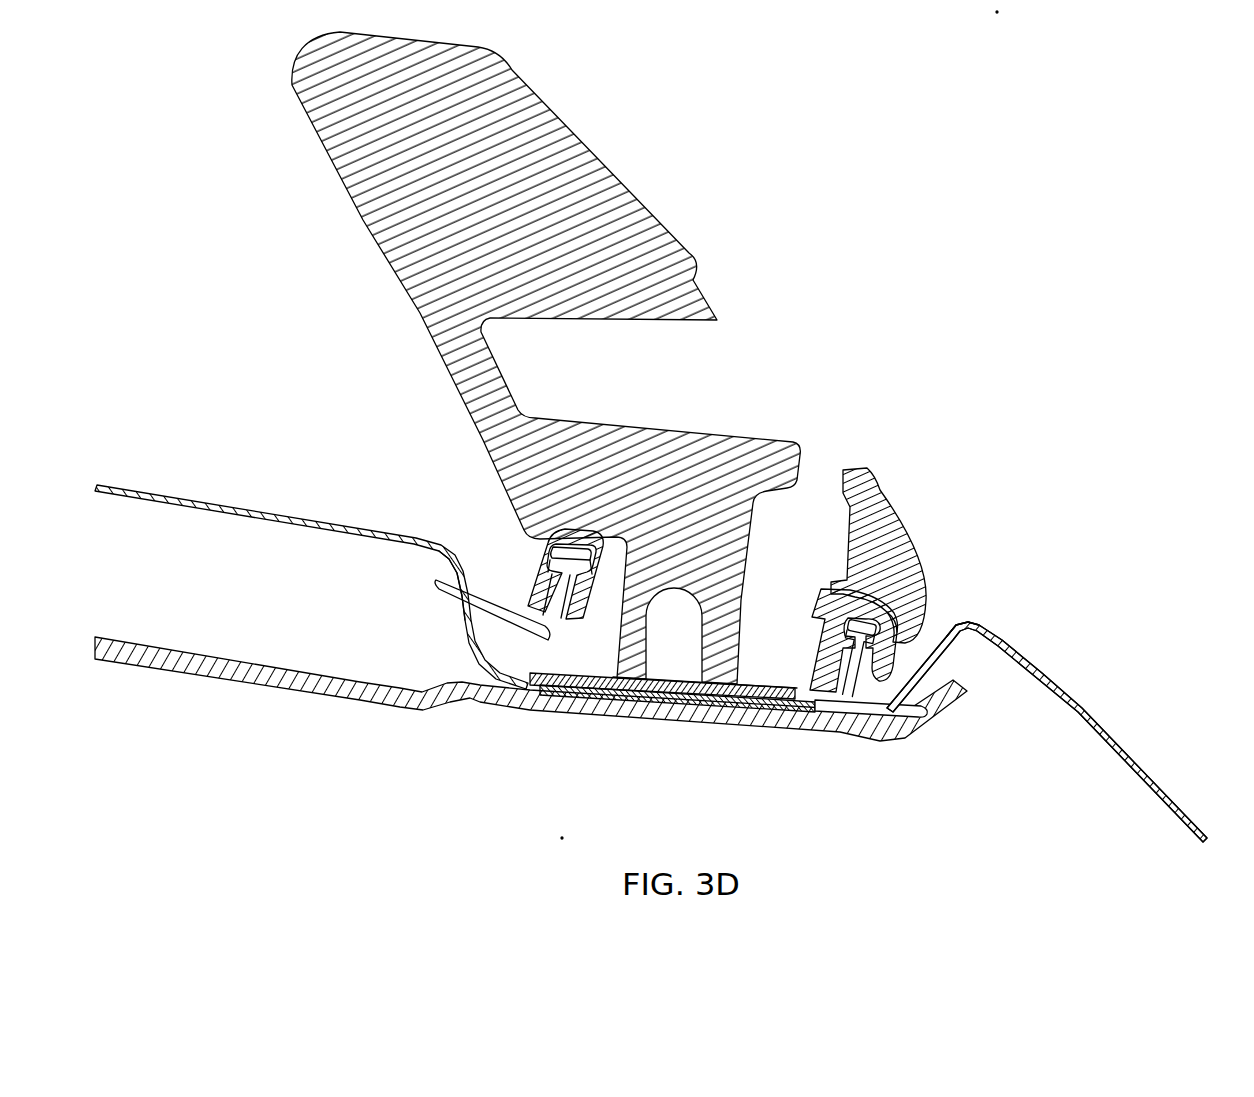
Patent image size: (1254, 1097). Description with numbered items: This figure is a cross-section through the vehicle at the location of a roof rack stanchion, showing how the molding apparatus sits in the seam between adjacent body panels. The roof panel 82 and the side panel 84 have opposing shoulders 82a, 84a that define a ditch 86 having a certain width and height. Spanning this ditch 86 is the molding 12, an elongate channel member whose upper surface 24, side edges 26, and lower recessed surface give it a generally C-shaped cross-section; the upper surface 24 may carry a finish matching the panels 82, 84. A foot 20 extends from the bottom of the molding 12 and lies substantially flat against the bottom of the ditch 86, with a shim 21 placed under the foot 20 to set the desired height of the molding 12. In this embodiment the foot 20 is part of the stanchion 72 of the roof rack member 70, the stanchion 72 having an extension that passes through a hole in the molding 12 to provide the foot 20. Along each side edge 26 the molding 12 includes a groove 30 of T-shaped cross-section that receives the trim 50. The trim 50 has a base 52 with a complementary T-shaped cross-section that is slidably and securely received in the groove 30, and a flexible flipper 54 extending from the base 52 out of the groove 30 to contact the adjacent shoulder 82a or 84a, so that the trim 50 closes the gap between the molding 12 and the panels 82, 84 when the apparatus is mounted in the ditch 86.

The molding 12 is at (895, 608).
The foot 20 is at (613, 663).
The shim 21 is at (677, 683).
The upper surface 24 is at (834, 590).
The side edge 26 is at (887, 653).
The groove 30 is at (866, 642).
The trim 50 is at (507, 645).
The base 52 is at (570, 553).
The flipper 54 is at (505, 624).
The roof rack member 70 is at (515, 358).
The stanchion 72 is at (417, 312).
The roof panel 82 is at (290, 515).
The shoulder 82a is at (466, 565).
The side panel 84 is at (1097, 721).
The shoulder 84a is at (960, 625).
The ditch 86 is at (770, 652).